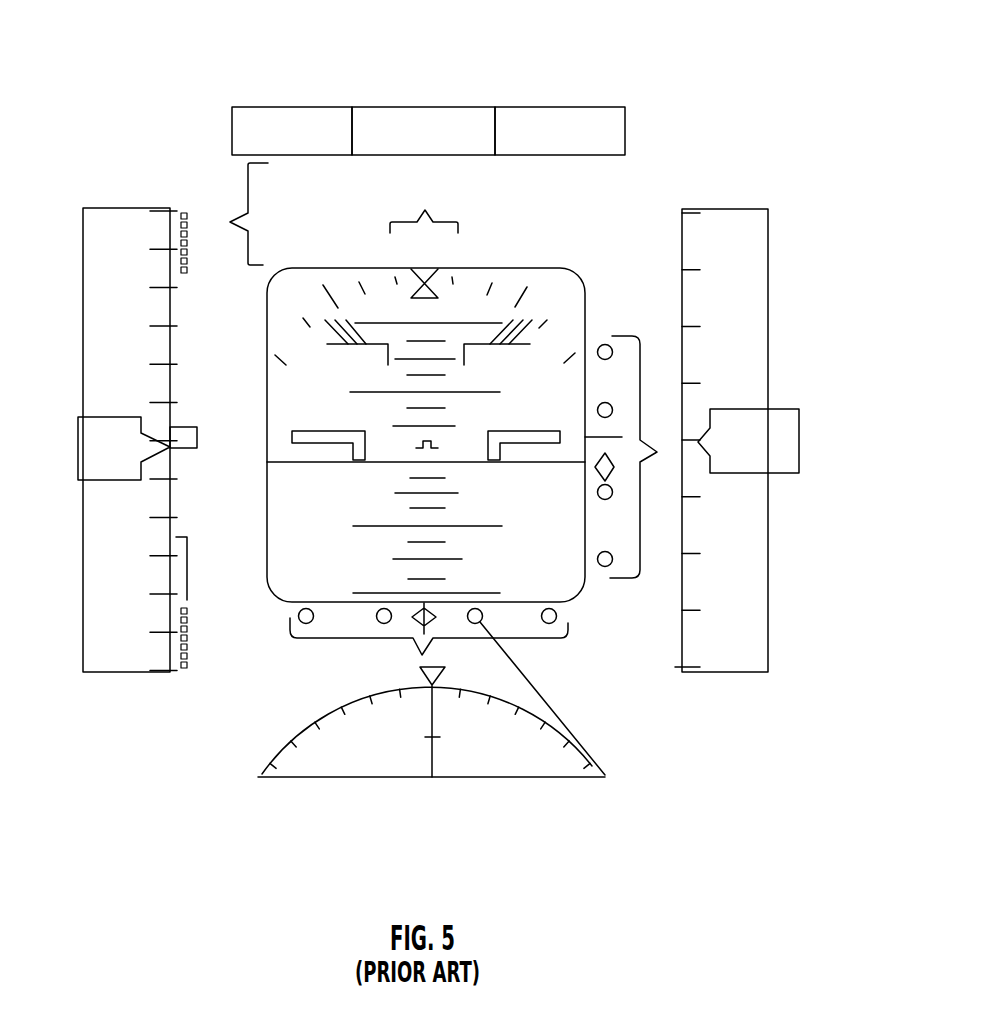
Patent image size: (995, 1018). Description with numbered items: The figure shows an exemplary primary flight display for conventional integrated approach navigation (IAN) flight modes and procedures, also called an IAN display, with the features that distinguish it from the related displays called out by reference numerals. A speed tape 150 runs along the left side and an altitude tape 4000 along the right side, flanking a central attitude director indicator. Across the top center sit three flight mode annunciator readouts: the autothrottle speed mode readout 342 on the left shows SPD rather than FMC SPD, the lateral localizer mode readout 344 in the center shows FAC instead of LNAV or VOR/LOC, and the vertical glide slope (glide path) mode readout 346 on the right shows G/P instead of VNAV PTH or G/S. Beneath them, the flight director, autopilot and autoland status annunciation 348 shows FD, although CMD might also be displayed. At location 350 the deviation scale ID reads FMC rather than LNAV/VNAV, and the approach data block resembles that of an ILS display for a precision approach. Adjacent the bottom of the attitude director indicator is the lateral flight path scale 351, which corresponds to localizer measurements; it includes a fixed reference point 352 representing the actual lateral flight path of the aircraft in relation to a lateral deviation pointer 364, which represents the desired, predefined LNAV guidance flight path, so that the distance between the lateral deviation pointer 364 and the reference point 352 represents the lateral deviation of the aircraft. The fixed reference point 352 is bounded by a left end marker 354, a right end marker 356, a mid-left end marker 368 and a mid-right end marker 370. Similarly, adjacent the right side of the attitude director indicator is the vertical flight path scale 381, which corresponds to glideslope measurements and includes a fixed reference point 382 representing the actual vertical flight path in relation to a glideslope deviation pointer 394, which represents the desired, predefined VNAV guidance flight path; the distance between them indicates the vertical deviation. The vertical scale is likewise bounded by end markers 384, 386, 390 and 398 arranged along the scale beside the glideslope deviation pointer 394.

The airspeed tape 150 is at (137, 420).
The altitude tape 4000 is at (737, 425).
The autothrottle speed mode readout 342 is at (305, 107).
The lateral localizer mode readout 344 is at (408, 107).
The vertical glide slope mode readout 346 is at (532, 107).
The flight director, autopilot and autoland status annunciation 348 is at (425, 210).
The deviation scale ID and approach data block 350 is at (230, 222).
The lateral flight path scale 351 is at (433, 623).
The fixed reference point 352 is at (413, 638).
The left end marker 354 is at (300, 622).
The right end marker 356 is at (557, 616).
The lateral deviation pointer 364 is at (433, 620).
The mid-left end marker 368 is at (378, 622).
The mid-right end marker 370 is at (592, 766).
The vertical flight path scale 381 is at (657, 452).
The fixed reference point 382 is at (622, 437).
The glideslope scale dot 384 is at (613, 560).
The glideslope scale dot 386 is at (611, 348).
The glideslope scale dot 390 is at (611, 406).
The glideslope deviation pointer 394 is at (614, 467).
The glideslope scale dot 398 is at (612, 494).